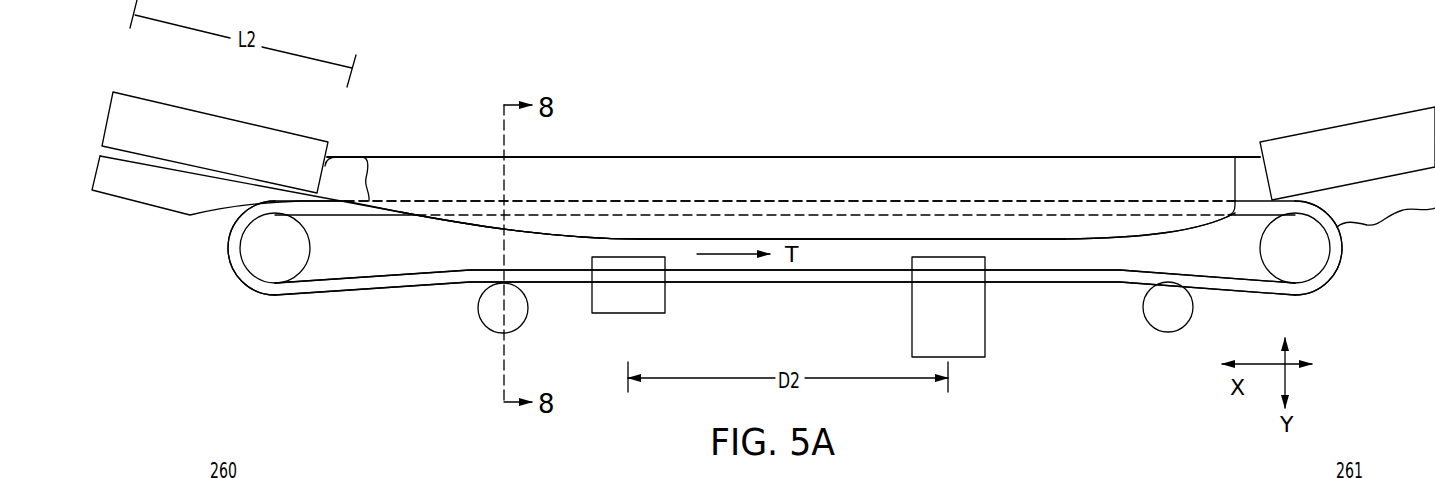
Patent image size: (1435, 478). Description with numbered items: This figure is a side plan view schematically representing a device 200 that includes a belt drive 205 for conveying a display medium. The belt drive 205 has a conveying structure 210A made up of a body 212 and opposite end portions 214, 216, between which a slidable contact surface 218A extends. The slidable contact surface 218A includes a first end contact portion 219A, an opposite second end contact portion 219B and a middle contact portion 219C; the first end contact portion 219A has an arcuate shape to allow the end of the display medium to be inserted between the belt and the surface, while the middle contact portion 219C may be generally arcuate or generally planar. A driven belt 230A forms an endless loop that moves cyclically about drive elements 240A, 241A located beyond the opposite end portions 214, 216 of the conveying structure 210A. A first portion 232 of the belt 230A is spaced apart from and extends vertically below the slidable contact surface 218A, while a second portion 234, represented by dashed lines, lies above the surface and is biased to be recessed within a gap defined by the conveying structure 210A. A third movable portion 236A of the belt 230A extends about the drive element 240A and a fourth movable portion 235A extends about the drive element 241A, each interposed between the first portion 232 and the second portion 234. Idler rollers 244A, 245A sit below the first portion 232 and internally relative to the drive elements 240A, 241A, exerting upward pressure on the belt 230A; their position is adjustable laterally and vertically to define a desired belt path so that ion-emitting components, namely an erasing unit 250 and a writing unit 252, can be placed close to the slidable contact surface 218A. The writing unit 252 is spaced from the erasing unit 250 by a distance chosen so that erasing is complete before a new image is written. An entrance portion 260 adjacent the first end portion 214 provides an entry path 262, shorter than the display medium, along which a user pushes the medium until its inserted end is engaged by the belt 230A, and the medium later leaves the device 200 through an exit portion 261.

The device 200 is at (855, 62).
The belt drive 205 is at (607, 135).
The conveying structure 210A is at (1074, 150).
The body 212 is at (750, 175).
The first end portion 214 is at (372, 157).
The second end portion 216 is at (1233, 178).
The slidable contact surface 218A is at (841, 237).
The first end contact portion 219A is at (405, 218).
The second end contact portion 219B is at (1180, 232).
The middle contact portion 219C is at (785, 238).
The second portion 234 is at (975, 202).
The belt 230A is at (1062, 292).
The first portion 232 is at (1088, 284).
The fourth movable portion 235A is at (1340, 262).
The third movable portion 236A is at (229, 250).
The drive element 240A is at (275, 250).
The drive element 241A is at (1295, 250).
The idler roller 244A is at (512, 308).
The idler roller 245A is at (1170, 308).
The erasing unit 250 is at (666, 298).
The writing unit 252 is at (912, 318).
The entrance portion 260 is at (243, 120).
The exit portion 261 is at (1357, 119).
The entry path 262 is at (160, 172).